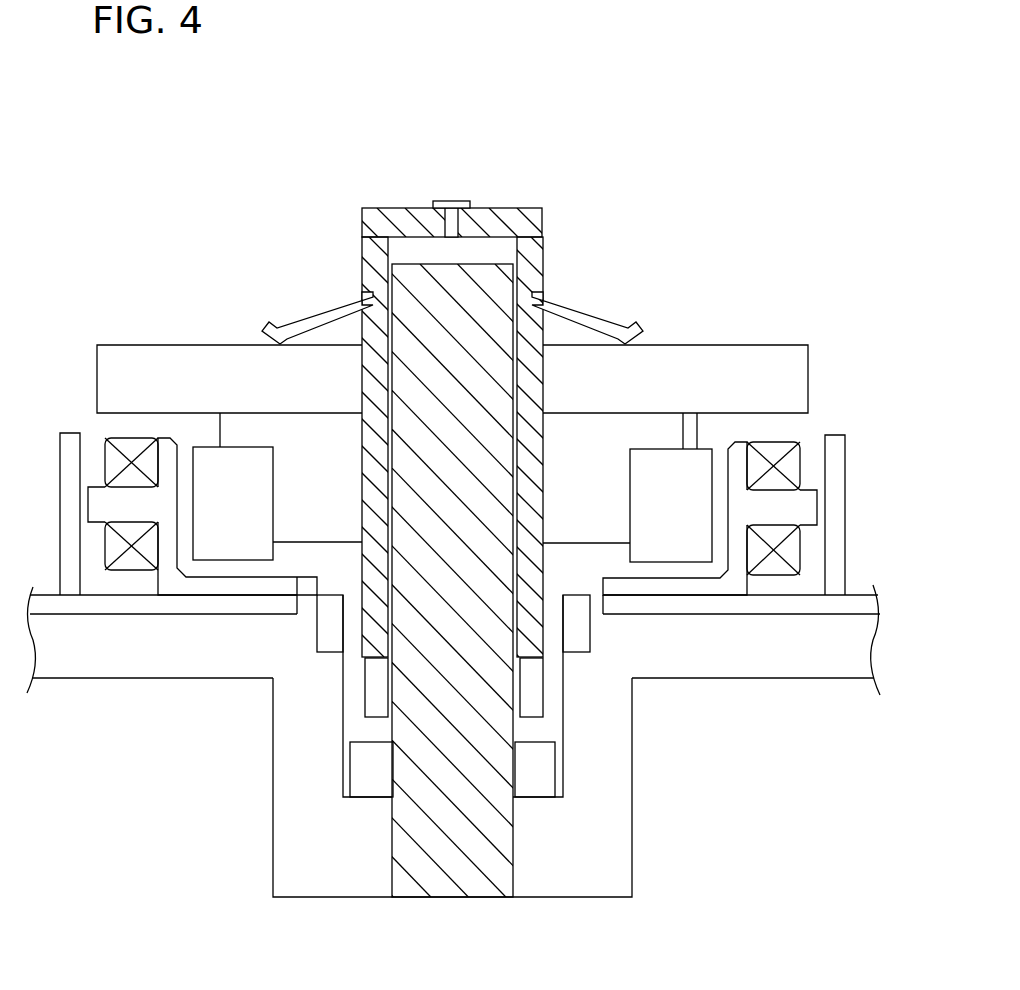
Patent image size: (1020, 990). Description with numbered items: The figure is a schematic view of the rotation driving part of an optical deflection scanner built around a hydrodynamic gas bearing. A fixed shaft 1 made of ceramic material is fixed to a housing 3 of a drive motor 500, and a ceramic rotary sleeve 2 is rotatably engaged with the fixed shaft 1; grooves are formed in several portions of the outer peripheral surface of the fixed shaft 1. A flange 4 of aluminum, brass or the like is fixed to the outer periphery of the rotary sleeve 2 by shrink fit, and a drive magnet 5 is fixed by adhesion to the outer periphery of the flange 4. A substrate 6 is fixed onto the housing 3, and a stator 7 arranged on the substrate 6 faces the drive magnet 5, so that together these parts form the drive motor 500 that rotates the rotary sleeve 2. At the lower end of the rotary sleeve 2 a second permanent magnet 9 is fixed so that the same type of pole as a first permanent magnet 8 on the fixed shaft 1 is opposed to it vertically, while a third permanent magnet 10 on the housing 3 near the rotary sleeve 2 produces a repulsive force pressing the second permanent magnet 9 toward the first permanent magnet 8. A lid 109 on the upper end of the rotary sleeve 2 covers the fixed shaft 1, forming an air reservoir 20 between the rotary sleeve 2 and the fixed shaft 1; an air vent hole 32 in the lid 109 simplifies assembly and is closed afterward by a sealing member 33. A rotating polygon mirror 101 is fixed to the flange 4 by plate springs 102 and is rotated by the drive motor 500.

The drive motor 500 is at (549, 176).
The fixed shaft 1 is at (458, 867).
The rotary sleeve 2 is at (536, 335).
The housing 3 is at (582, 867).
The flange 4 is at (657, 433).
The drive magnet 5 is at (700, 467).
The substrate 6 is at (858, 603).
The stator 7 is at (795, 507).
The first permanent magnet 8 is at (350, 775).
The second permanent magnet 9 is at (365, 688).
The third permanent magnet 10 is at (317, 628).
The air reservoir 20 is at (413, 248).
The air vent hole 32 is at (466, 218).
The sealing member 33 is at (443, 200).
The rotating polygon mirror 101 is at (143, 360).
The plate springs 102 is at (308, 322).
The lid 109 is at (372, 224).